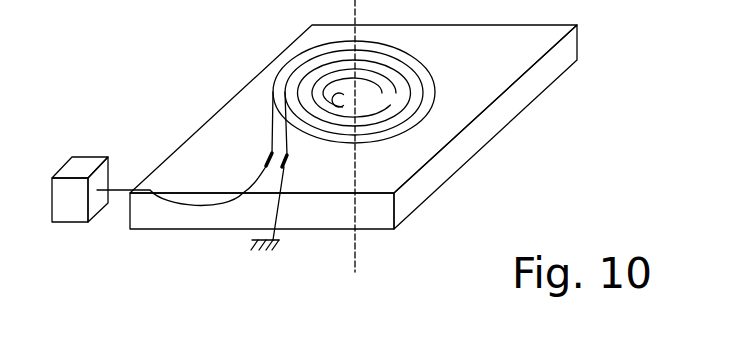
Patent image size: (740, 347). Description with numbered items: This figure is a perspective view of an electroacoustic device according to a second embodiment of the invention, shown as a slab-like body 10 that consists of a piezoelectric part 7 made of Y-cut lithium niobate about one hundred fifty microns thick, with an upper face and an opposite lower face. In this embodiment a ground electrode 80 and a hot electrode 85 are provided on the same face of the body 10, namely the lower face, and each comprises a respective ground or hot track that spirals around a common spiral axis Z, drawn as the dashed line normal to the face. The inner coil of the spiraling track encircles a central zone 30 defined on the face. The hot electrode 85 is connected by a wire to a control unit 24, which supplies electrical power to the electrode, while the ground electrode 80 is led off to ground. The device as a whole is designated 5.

The sensor device 5 is at (398, 114).
The piezoelectric part 7 is at (558, 62).
The body 10 is at (503, 110).
The central zone 30 is at (350, 104).
The hot electrode 85 is at (272, 132).
The ground electrode 80 is at (283, 237).
The control unit 24 is at (97, 200).